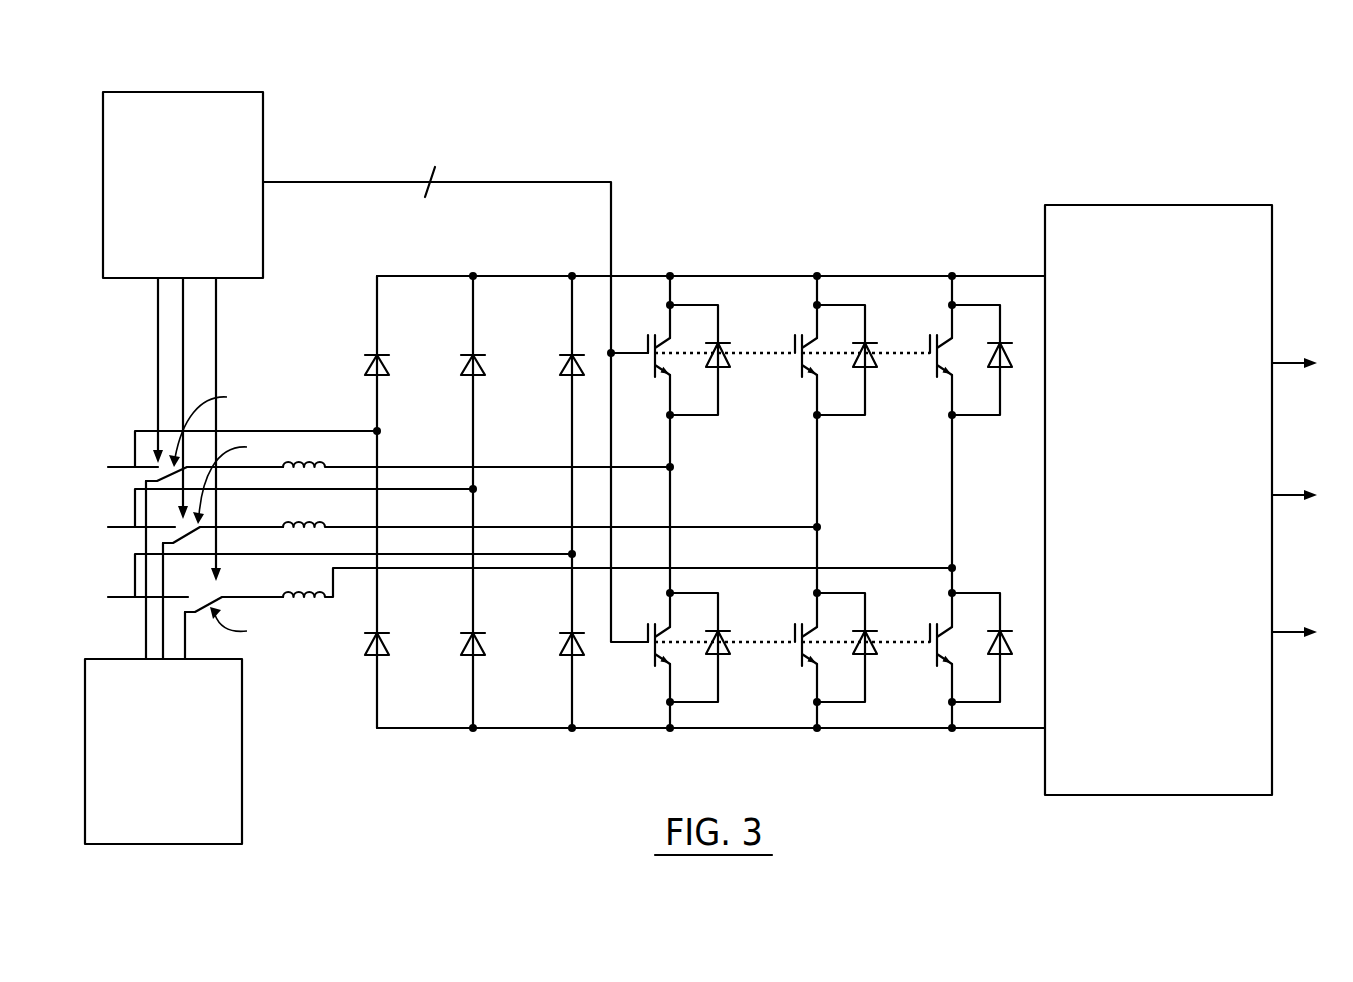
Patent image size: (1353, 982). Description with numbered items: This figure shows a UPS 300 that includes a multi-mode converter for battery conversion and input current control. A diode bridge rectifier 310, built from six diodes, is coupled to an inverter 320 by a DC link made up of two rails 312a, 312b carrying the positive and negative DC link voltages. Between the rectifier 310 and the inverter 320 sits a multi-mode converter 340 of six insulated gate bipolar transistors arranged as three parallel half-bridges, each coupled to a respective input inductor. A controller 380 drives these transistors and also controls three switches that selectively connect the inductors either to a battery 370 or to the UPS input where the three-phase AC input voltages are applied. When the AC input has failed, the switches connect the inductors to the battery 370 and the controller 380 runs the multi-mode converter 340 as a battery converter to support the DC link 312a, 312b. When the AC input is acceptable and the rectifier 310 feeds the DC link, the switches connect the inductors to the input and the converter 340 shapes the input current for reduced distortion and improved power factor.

The UPS 300 is at (1131, 126).
The diode bridge rectifier 310 is at (422, 773).
The DC link rail 312a is at (523, 274).
The DC link rail 312b is at (597, 730).
The inverter 320 is at (1272, 755).
The multi-mode converter 340 is at (924, 771).
The battery 370 is at (242, 775).
The controller 380 is at (263, 138).